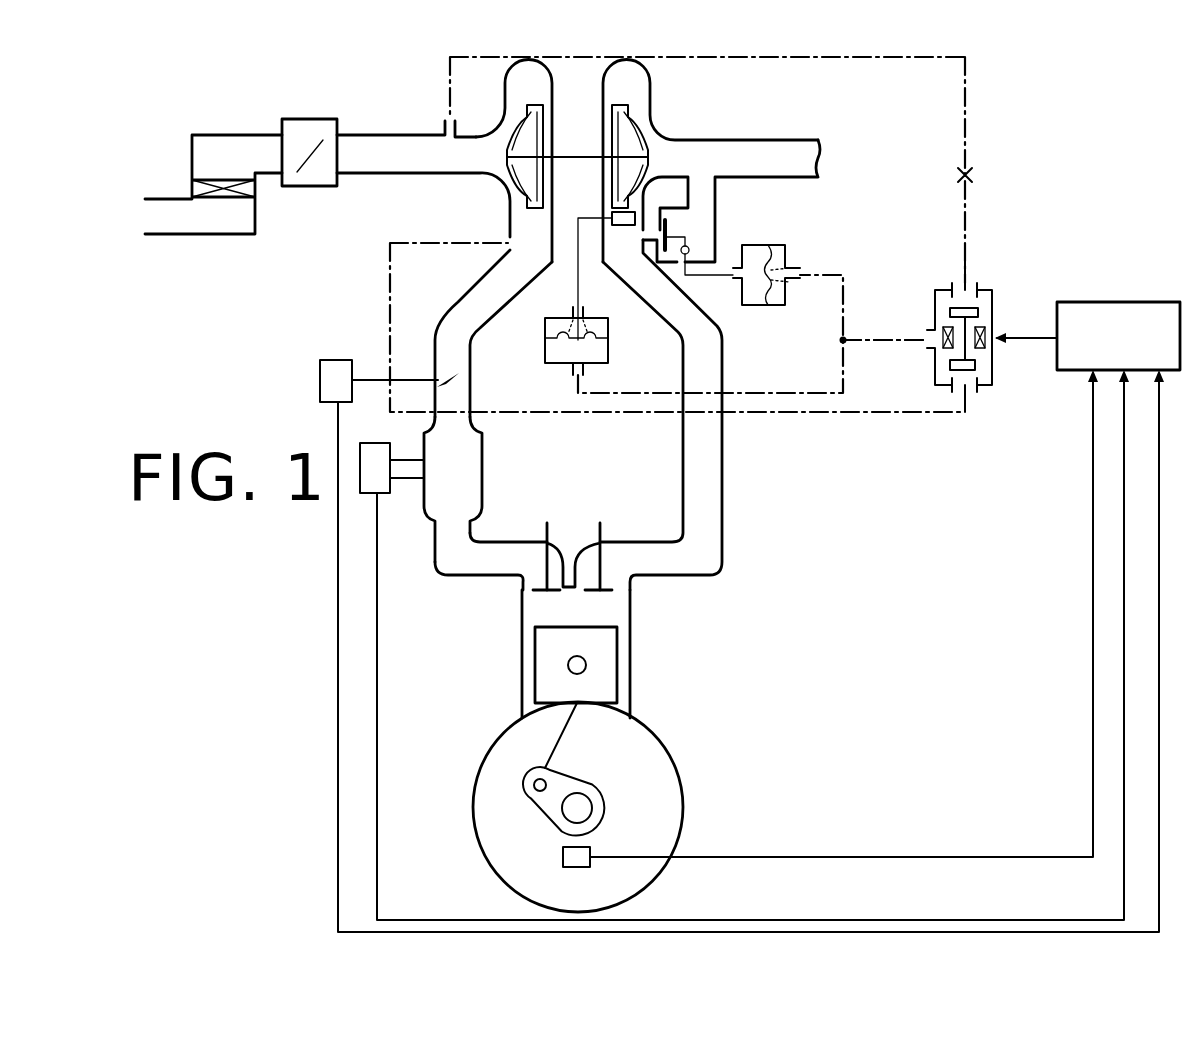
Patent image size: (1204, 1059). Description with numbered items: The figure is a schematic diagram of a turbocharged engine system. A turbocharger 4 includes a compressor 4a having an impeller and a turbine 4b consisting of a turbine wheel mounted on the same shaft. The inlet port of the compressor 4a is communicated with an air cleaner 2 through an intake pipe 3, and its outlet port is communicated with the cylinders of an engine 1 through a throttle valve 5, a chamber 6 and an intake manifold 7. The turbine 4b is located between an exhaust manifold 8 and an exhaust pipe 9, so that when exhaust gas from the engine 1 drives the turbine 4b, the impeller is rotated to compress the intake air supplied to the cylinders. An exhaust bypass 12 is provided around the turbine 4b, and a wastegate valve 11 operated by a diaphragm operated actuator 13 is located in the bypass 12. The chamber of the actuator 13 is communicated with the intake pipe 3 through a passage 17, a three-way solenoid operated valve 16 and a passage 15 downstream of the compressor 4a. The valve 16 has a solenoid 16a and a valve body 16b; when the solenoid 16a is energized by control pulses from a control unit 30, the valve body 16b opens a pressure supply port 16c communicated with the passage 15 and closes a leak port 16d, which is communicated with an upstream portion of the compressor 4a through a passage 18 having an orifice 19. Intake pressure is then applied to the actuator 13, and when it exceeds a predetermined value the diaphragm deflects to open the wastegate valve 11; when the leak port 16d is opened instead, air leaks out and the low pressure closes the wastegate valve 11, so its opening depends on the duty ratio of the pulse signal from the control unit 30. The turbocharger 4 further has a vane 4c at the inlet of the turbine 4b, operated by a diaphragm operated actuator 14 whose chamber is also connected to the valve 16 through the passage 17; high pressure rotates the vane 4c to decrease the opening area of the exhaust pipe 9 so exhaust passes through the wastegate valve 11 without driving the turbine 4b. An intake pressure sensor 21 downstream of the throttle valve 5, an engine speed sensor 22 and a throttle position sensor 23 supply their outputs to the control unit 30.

The engine 1 is at (634, 686).
The air cleaner 2 is at (243, 205).
The intake pipe 3 is at (397, 165).
The turbocharger 4 is at (638, 199).
The compressor 4a is at (523, 120).
The turbine 4b is at (630, 110).
The vane 4c is at (609, 212).
The throttle valve 5 is at (455, 380).
The chamber 6 is at (483, 433).
The intake manifold 7 is at (450, 577).
The exhaust manifold 8 is at (712, 558).
The exhaust pipe 9 is at (785, 140).
The wastegate valve 11 is at (667, 221).
The exhaust bypass 12 is at (700, 192).
The diaphragm operated actuator 13 is at (776, 306).
The diaphragm operated actuator 14 is at (610, 352).
The passage 15 is at (836, 414).
The three-way solenoid operated valve 16 is at (992, 343).
The solenoid 16a is at (986, 348).
The valve body 16b is at (977, 372).
The pressure supply port 16c is at (970, 398).
The leak port 16d is at (970, 285).
The passage 17 is at (873, 342).
The passage 18 is at (968, 218).
The orifice 19 is at (978, 175).
The intake pressure sensor 21 is at (383, 443).
The engine speed sensor 22 is at (593, 848).
The throttle position sensor 23 is at (342, 360).
The control unit 30 is at (1127, 302).